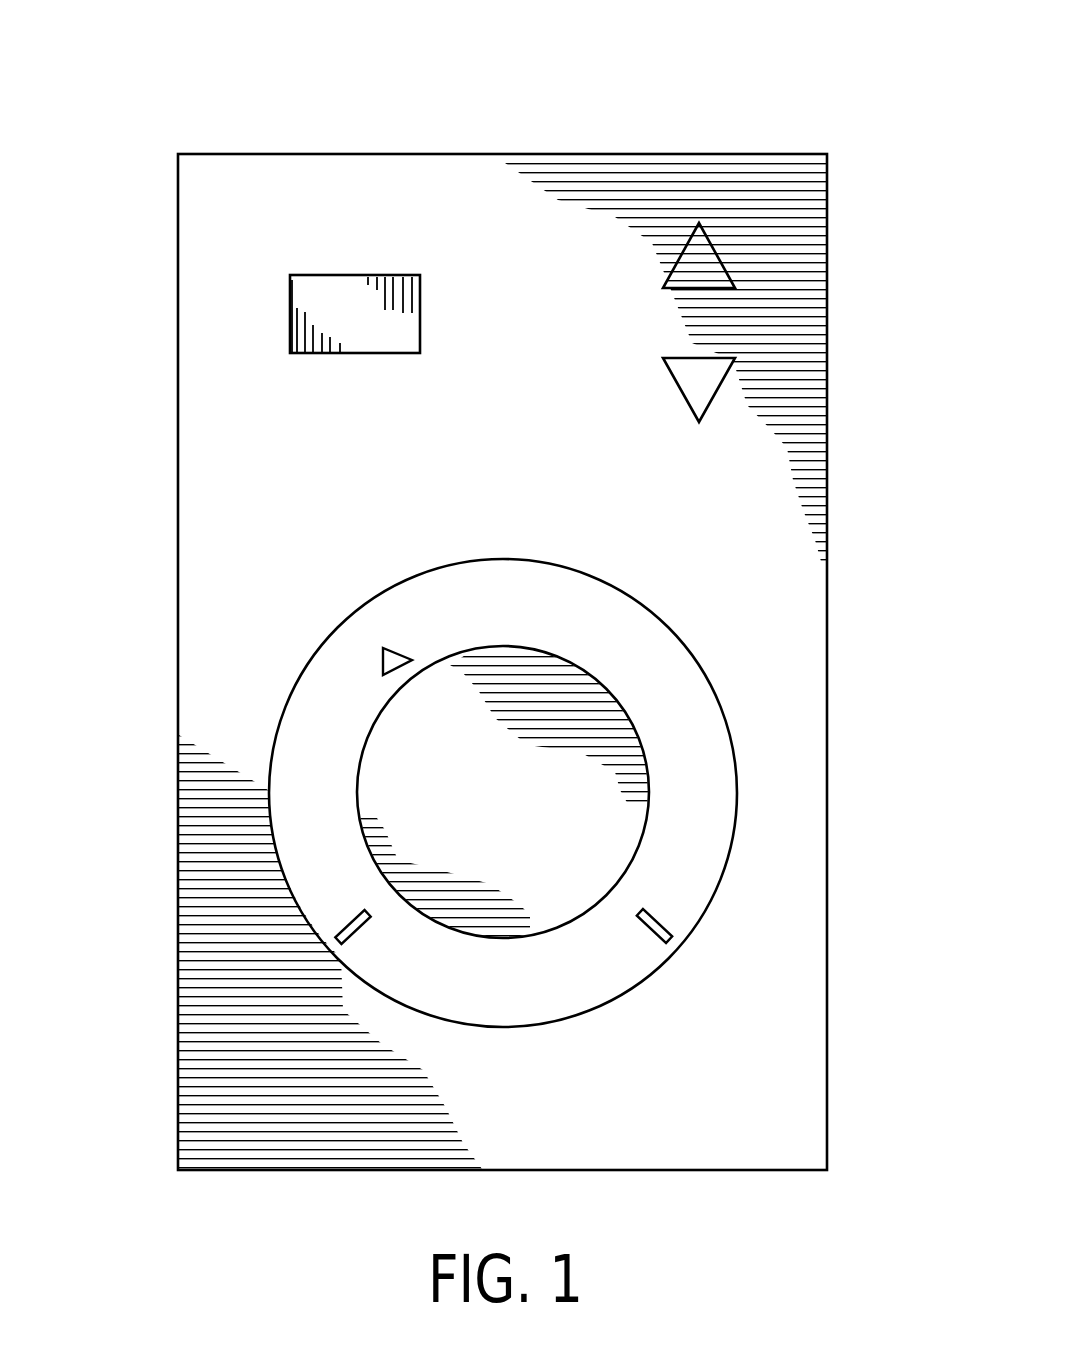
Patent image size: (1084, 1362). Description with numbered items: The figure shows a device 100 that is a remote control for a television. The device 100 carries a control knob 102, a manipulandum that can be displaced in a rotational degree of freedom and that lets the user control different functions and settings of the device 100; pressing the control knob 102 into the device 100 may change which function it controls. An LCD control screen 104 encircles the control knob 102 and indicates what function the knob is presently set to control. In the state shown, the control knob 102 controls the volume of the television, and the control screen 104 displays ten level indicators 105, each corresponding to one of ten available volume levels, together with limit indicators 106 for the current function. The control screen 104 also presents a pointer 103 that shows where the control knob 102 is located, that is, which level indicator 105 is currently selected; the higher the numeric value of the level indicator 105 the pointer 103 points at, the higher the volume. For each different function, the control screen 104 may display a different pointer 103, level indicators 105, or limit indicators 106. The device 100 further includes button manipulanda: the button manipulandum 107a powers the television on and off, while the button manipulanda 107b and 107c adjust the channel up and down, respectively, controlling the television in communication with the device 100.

The device 100 is at (283, 102).
The control knob 102 is at (573, 883).
The pointer 103 is at (382, 655).
The LCD control screen 104 is at (503, 588).
The level indicators 105 is at (446, 578).
The limit indicators 106 is at (336, 938).
The button manipulandum 107a is at (308, 303).
The button manipulandum 107b is at (700, 268).
The button manipulandum 107c is at (705, 385).